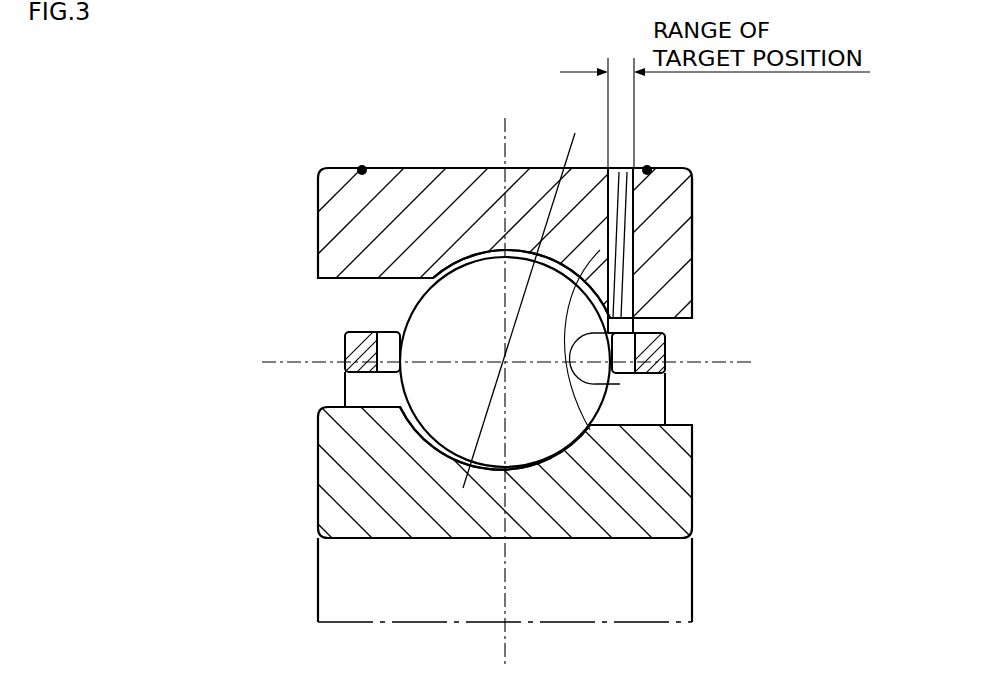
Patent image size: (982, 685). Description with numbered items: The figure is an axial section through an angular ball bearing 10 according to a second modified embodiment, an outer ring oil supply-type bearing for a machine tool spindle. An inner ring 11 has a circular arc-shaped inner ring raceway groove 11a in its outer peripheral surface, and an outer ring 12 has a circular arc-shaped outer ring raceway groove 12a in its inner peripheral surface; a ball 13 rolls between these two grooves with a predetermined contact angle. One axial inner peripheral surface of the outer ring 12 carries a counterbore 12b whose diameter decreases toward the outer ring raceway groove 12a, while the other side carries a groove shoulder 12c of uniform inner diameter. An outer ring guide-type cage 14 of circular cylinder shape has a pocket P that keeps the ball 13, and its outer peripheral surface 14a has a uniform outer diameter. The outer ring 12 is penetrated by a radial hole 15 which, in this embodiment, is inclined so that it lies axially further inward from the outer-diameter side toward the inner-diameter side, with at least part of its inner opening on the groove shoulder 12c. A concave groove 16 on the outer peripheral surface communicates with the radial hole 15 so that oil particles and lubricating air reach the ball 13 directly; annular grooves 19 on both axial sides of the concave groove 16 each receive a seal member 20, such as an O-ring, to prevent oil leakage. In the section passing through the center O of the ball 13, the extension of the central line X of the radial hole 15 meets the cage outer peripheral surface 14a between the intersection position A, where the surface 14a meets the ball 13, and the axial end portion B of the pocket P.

The angular ball bearing 10 is at (686, 142).
The inner ring 11 is at (367, 465).
The inner ring raceway groove 11a is at (523, 467).
The outer ring 12 is at (346, 224).
The outer ring raceway groove 12a is at (590, 425).
The counterbore 12b is at (367, 279).
The groove shoulder 12c is at (655, 306).
The ball 13 is at (420, 388).
The cage 14 is at (345, 339).
The outer peripheral surface of the cage 14a is at (382, 332).
The radial hole 15 is at (703, 178).
The concave groove 16 is at (620, 170).
The annular groove 19 is at (362, 167).
The seal member 20 is at (648, 166).
The pocket P is at (396, 333).
The center of the ball O is at (504, 358).
The central line of the radial hole X is at (587, 278).
The intersection position A is at (613, 384).
The axial end portion of the pocket B is at (640, 326).